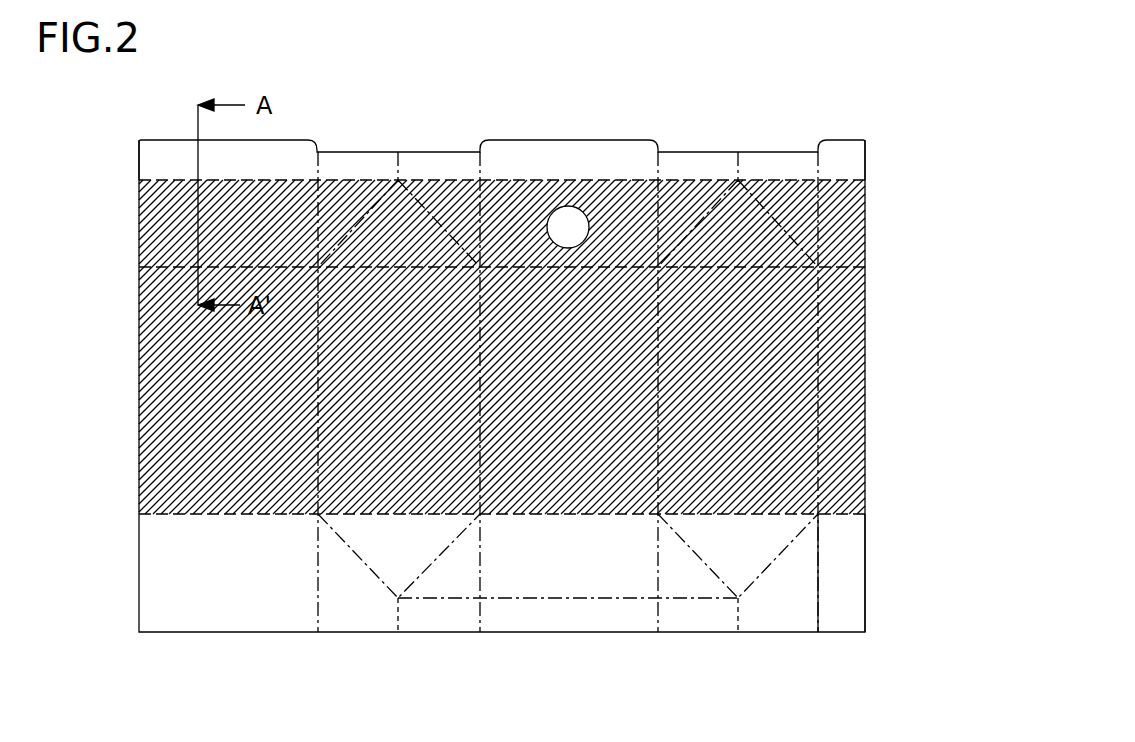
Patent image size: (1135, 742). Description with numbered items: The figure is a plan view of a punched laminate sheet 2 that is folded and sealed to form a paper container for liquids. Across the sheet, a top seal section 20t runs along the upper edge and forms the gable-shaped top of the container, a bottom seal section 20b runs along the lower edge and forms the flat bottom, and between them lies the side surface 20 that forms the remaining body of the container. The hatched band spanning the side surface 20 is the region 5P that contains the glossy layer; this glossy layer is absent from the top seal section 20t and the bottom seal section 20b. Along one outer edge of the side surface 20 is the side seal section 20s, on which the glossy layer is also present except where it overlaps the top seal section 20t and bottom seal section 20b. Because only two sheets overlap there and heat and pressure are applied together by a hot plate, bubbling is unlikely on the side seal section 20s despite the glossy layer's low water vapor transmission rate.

The laminate sheet 2 is at (878, 132).
The region containing glossy layer 5P is at (118, 181).
The side surface 20 is at (882, 182).
The top seal section 20t is at (882, 138).
The bottom seal section 20b is at (882, 516).
The side seal section 20s is at (865, 634).